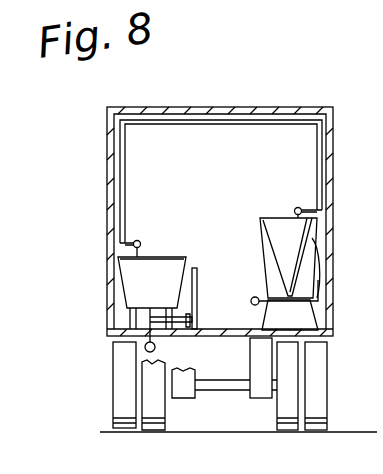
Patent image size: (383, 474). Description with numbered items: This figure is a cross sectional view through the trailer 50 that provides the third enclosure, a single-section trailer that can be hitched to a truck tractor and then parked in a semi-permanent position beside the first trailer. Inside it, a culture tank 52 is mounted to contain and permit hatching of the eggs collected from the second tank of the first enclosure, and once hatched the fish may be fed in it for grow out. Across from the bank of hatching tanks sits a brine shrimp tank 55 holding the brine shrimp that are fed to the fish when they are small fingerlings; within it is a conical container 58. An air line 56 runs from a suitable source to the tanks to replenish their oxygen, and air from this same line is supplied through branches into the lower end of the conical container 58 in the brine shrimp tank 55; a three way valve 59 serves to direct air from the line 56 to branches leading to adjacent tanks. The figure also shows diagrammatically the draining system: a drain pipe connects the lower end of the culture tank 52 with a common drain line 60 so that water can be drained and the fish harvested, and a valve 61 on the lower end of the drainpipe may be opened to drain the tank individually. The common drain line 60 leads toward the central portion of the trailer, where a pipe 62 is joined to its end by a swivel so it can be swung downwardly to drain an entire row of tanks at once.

The trailer 50 is at (100, 140).
The culture tank 52 is at (135, 278).
The brine shrimp tank 55 is at (272, 276).
The air line 56 is at (233, 123).
The conical container 58 is at (273, 217).
The three way valve 59 is at (141, 243).
The common drain line 60 is at (181, 325).
The valve 61 is at (144, 349).
The pipe 62 is at (198, 279).